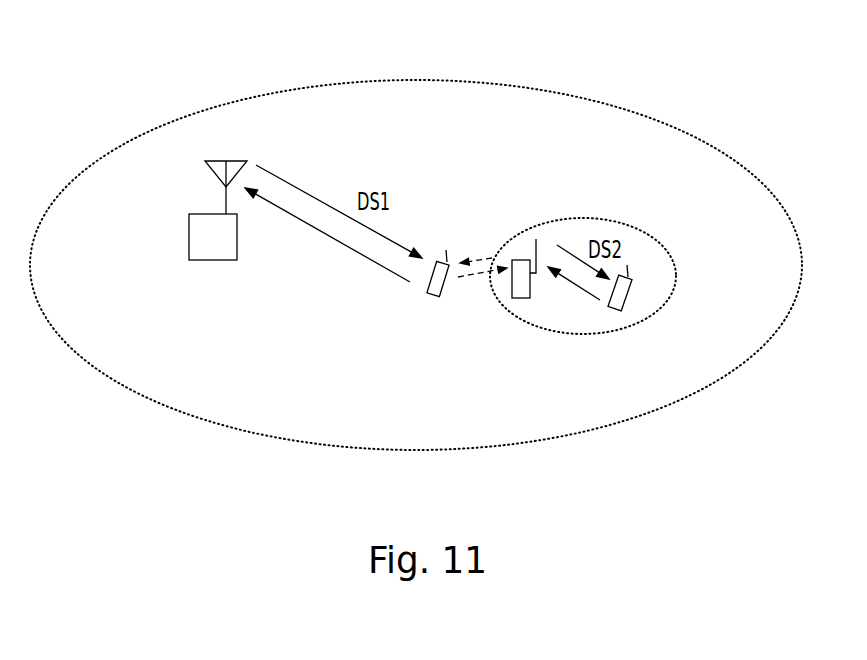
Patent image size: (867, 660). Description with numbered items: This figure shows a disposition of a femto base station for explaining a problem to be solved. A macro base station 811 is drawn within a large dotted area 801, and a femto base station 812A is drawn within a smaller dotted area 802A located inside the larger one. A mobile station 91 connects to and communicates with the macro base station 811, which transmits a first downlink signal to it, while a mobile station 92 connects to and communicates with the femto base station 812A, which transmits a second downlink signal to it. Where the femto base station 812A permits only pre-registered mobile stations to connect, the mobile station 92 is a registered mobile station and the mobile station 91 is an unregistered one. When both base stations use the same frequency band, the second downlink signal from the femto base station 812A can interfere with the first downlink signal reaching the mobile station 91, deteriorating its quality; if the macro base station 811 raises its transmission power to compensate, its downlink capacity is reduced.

The coverage area of base station 801 is at (412, 80).
The coverage area of relay terminal 802A is at (580, 218).
The macro base station 811 is at (189, 220).
The mobile station 91 is at (433, 296).
The femto base station 812A is at (520, 298).
The mobile station 92 is at (628, 292).